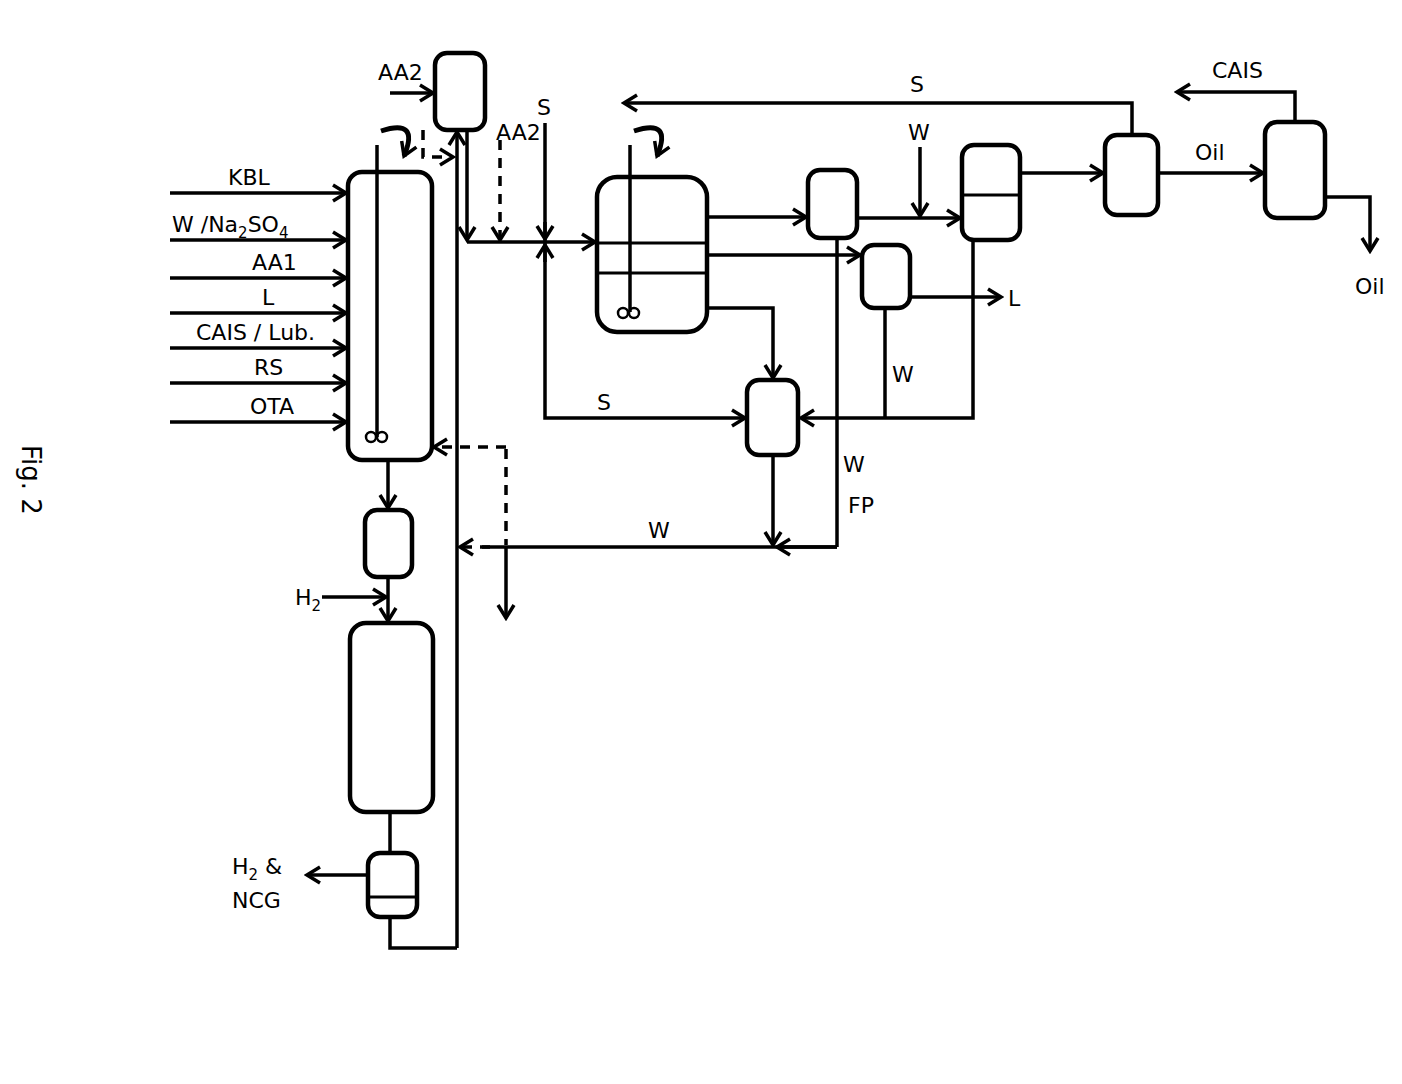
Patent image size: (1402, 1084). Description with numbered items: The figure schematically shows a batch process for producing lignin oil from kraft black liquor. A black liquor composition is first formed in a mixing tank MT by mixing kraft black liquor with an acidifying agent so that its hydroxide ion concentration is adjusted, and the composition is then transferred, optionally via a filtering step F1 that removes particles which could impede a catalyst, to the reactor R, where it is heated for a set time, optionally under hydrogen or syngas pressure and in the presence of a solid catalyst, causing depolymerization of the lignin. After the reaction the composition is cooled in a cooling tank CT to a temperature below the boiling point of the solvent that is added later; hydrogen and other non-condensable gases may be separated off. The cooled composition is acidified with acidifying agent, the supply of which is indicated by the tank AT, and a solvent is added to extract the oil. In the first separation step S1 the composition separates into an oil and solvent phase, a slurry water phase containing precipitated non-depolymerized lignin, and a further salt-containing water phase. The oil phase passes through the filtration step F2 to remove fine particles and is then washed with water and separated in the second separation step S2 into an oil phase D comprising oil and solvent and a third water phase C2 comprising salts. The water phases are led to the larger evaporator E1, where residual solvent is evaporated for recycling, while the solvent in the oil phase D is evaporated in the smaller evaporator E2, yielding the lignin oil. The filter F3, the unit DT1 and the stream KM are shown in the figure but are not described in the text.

The mixing tank MT is at (390, 294).
The additive tank AT is at (460, 91).
The first separation step S1 is at (670, 206).
The second separation step S2 is at (1022, 212).
The evaporation step E1 is at (772, 417).
The evaporation of the solvent E2 is at (1131, 175).
The filtering step F1 is at (388, 543).
The filtration step F2 is at (832, 204).
The third filter F3 is at (886, 276).
The oil phase D is at (991, 192).
The third water phase C2 is at (991, 217).
The distillation unit DT1 is at (1295, 170).
The reactor R is at (391, 717).
The cooling tank CT is at (392, 885).
The potassium-containing stream KM is at (521, 604).